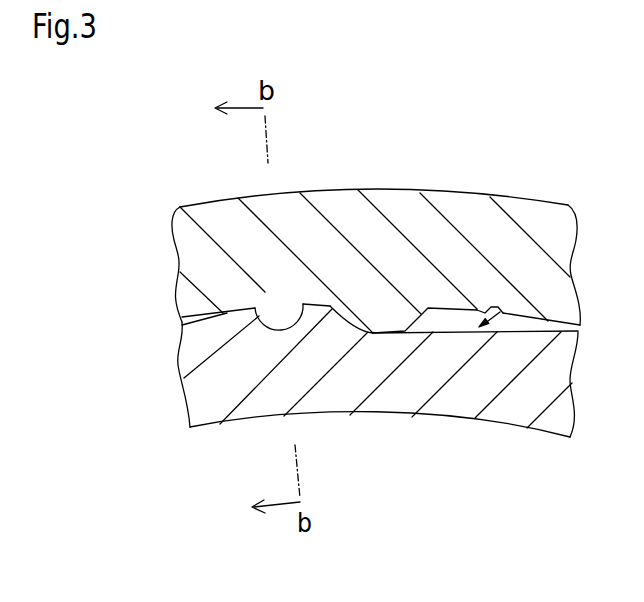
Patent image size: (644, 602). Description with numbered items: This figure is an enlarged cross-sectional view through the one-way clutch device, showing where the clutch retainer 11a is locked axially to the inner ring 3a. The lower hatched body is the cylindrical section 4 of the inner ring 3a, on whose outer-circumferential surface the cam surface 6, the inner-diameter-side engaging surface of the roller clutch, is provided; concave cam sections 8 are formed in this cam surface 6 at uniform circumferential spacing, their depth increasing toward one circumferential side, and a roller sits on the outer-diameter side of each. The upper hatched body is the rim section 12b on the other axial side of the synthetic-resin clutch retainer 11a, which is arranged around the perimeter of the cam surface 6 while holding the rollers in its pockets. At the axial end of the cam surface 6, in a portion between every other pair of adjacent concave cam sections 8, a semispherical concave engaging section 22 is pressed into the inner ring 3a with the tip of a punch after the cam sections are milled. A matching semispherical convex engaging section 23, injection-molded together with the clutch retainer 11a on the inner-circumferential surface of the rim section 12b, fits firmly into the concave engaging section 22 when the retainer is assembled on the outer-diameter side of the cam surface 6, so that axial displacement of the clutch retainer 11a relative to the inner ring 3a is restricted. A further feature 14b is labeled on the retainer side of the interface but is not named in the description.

The inner ring 3a is at (229, 381).
The cylindrical section 4 is at (547, 396).
The cam surface 6 is at (505, 312).
The concave cam section 8 is at (416, 324).
The clutch retainer 11a is at (350, 207).
The rim section 12b is at (467, 215).
The corner surface 14b is at (378, 316).
The concave engaging section 22 is at (268, 312).
The convex engaging section 23 is at (280, 312).